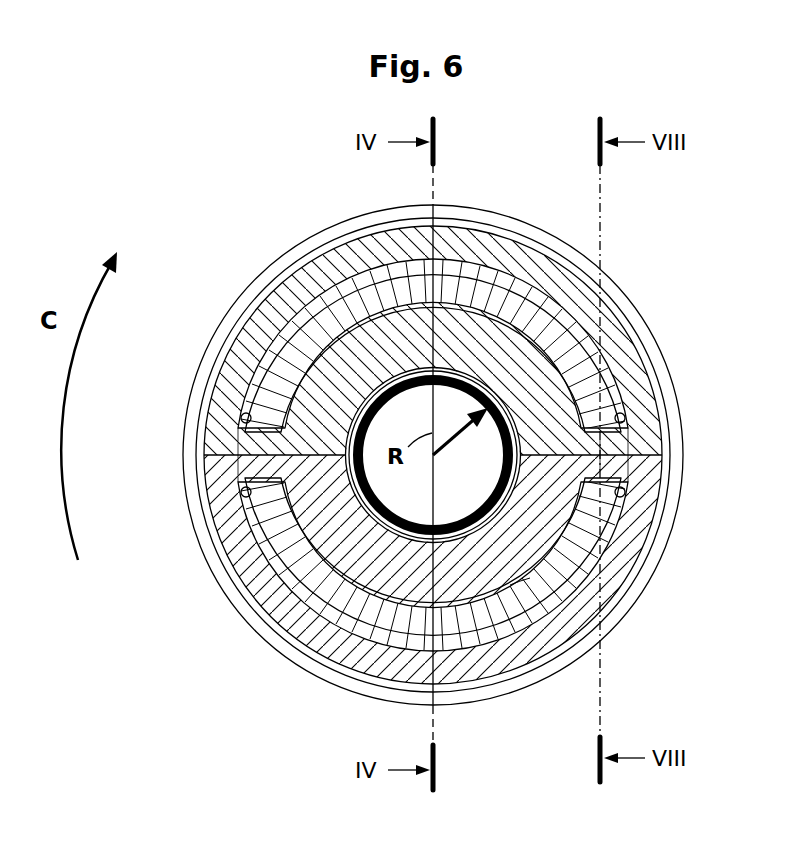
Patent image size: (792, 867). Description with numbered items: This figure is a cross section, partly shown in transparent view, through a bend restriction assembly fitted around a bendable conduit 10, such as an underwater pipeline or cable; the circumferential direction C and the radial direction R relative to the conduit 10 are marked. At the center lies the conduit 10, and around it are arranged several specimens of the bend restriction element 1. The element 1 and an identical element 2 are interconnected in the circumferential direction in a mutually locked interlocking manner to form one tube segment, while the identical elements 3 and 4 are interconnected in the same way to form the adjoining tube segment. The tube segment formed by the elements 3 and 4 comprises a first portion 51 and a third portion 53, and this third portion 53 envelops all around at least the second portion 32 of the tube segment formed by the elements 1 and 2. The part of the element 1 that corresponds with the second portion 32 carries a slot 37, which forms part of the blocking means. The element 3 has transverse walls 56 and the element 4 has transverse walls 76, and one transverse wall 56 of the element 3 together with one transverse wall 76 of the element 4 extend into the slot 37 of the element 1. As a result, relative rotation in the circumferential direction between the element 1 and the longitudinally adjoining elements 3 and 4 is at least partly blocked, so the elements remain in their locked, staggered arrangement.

The bend restriction element 1 is at (510, 270).
The bend restriction element 2 is at (358, 276).
The bend restriction element 3 is at (244, 646).
The bend restriction element 4 is at (256, 256).
The bendable conduit 10 is at (372, 426).
The second portion 32 is at (524, 610).
The slot 37 is at (620, 451).
The first portion 51 is at (505, 506).
The third portion 53 is at (647, 586).
The transverse walls 56 is at (248, 469).
The transverse walls 76 is at (248, 437).